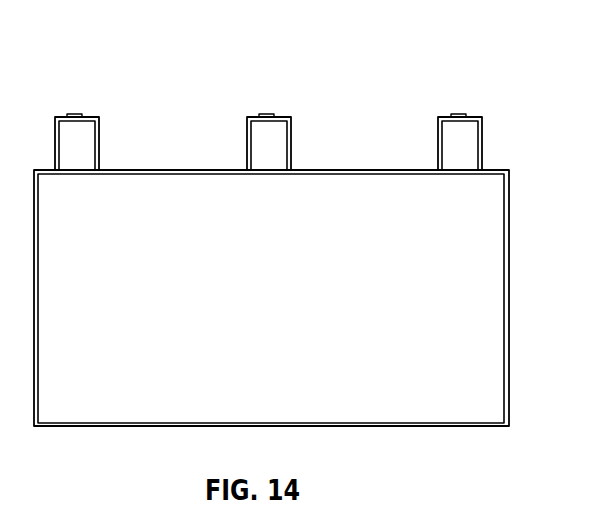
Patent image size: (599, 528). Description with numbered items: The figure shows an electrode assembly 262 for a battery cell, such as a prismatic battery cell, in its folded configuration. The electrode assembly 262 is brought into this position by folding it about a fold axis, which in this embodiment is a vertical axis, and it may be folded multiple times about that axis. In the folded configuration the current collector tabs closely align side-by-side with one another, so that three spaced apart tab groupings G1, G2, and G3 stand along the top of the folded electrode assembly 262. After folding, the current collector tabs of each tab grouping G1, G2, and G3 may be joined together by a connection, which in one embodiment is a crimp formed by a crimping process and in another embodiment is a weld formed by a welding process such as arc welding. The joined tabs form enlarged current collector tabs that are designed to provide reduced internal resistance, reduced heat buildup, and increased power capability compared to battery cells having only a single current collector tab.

The electrode assembly 262 is at (484, 303).
The tab grouping G1 is at (99, 99).
The tab grouping G2 is at (291, 99).
The tab grouping G3 is at (482, 99).